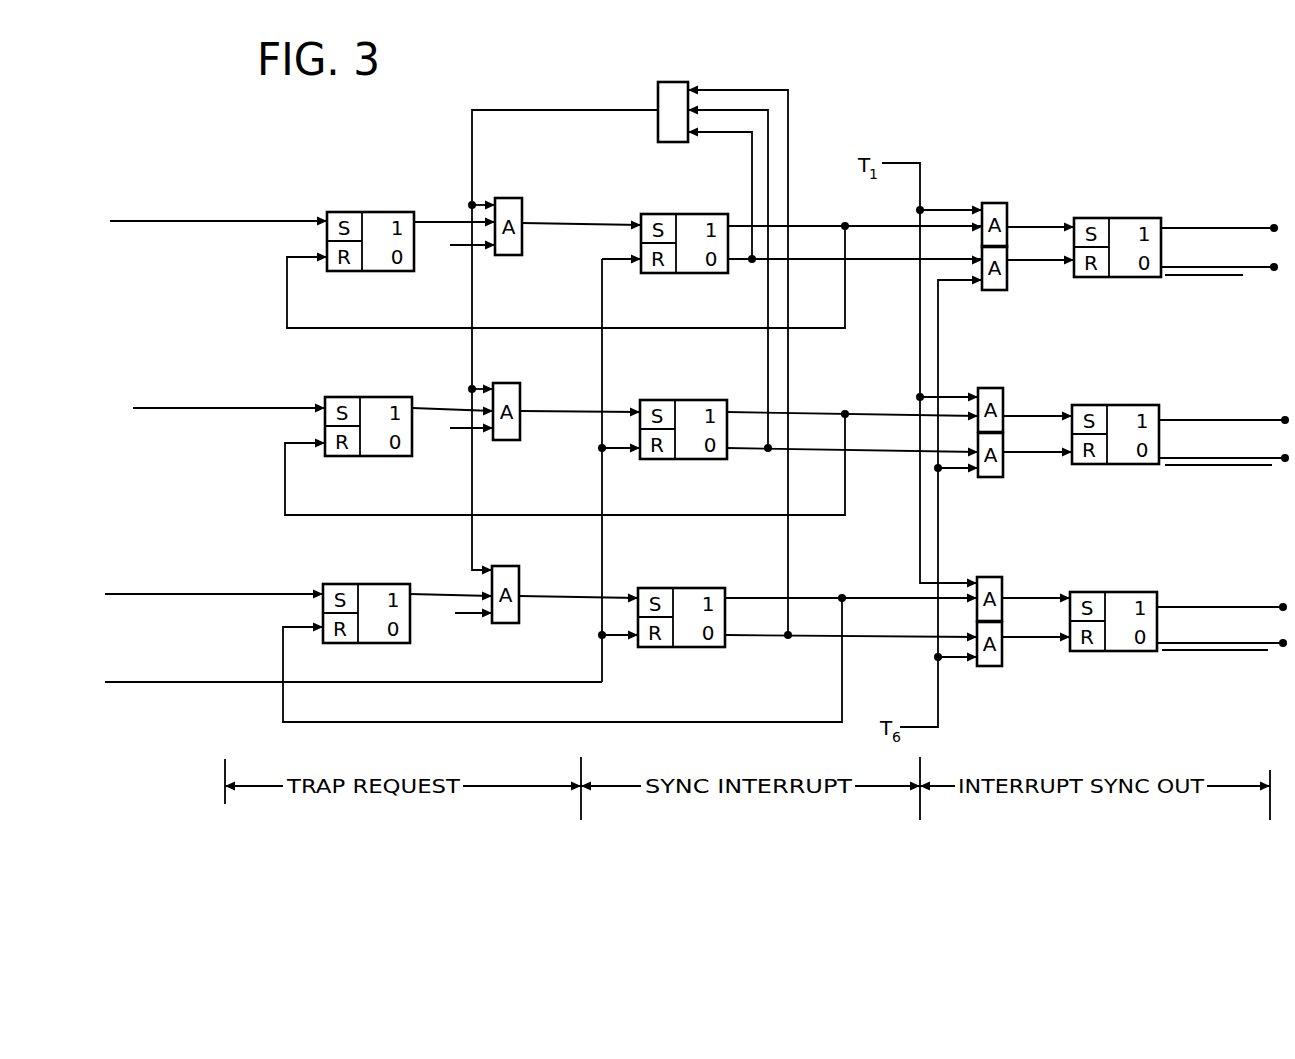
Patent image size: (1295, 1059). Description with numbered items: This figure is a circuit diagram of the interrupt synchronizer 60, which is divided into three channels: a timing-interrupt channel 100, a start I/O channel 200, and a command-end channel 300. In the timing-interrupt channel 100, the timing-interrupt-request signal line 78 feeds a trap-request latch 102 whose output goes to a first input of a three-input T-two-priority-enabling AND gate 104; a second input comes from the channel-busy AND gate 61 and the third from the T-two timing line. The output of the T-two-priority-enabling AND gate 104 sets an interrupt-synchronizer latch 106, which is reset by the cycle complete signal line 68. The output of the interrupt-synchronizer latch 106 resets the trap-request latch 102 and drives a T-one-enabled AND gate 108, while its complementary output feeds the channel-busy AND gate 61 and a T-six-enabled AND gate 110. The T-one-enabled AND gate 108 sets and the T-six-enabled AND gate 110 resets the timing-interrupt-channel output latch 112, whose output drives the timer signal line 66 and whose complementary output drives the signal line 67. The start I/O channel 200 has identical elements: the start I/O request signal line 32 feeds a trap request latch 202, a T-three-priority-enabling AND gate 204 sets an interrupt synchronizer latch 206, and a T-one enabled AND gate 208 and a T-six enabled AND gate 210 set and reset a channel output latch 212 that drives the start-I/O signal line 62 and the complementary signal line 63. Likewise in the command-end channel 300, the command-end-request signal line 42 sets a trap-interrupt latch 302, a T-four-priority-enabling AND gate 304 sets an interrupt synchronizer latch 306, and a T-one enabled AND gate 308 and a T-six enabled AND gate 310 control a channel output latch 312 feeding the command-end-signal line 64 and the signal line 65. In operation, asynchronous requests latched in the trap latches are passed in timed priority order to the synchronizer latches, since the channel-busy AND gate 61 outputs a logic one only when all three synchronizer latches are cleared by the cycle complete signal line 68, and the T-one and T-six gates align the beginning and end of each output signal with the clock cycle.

The channel-busy AND gate 61 is at (658, 94).
The timing-interrupt channel 100 is at (305, 187).
The timing-interrupt-request signal line 78 is at (292, 218).
The trap-request latch 102 is at (366, 212).
The T2-priority-enabling AND gate 104 is at (496, 198).
The interrupt-synchronizer latch 106 is at (717, 214).
The T1-enabled AND gate 108 is at (988, 203).
The T6-enabled AND gate 110 is at (990, 290).
The timing-interrupt-channel output latch 112 is at (1132, 218).
The timer signal line 66 is at (1172, 230).
The signal line 67 is at (1230, 267).
The start I/O channel 200 is at (296, 388).
The start I/O request signal line 32 is at (281, 410).
The trap request latch 202 is at (366, 397).
The T3-priority-enabling AND gate 204 is at (495, 383).
The interrupt synchronizer latch 206 is at (716, 400).
The T1 enabled AND gate 208 is at (985, 388).
The T6 enabled AND gate 210 is at (990, 478).
The channel output latch 212 is at (1108, 405).
The start-I/O signal line 62 is at (1174, 425).
The signal line 63 is at (1264, 458).
The command-end channel 300 is at (300, 568).
The command-end-request signal line 42 is at (278, 596).
The trap-interrupt latch 302 is at (372, 584).
The T4-priority-enabling AND gate 304 is at (494, 566).
The interrupt synchronizer latch 306 is at (686, 588).
The T1 enabled AND gate 308 is at (984, 577).
The T6 enabled AND gate 310 is at (990, 666).
The channel output latch 312 is at (1122, 592).
The command-end-signal line 64 is at (1174, 615).
The signal line 65 is at (1264, 643).
The interrupt synchronizer 60 is at (230, 699).
The cycle complete signal line 68 is at (425, 683).